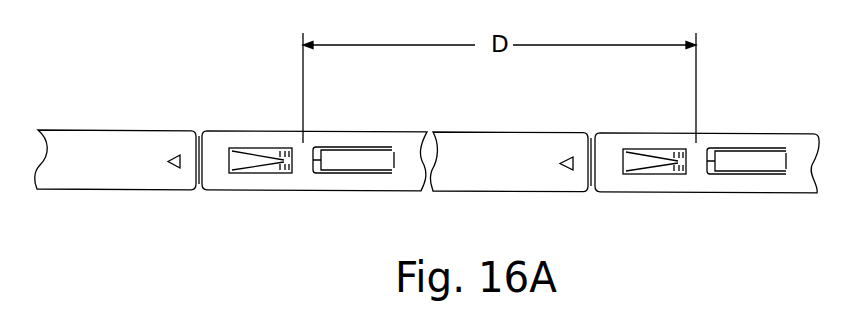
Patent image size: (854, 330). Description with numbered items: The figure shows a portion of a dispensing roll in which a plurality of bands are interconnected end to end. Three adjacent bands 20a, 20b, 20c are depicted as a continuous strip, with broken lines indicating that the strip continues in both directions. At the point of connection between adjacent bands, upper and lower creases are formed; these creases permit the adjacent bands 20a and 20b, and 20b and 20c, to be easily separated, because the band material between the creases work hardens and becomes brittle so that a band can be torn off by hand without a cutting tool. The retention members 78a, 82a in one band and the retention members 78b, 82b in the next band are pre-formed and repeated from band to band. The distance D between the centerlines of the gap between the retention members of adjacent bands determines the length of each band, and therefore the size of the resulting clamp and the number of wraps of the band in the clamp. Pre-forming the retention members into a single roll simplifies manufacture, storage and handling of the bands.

The band 20a is at (722, 133).
The band 20b is at (334, 131).
The band 20c is at (115, 130).
The retention member 78a is at (715, 175).
The retention member 78b is at (327, 173).
The retention member 82a is at (650, 175).
The retention member 82b is at (258, 173).